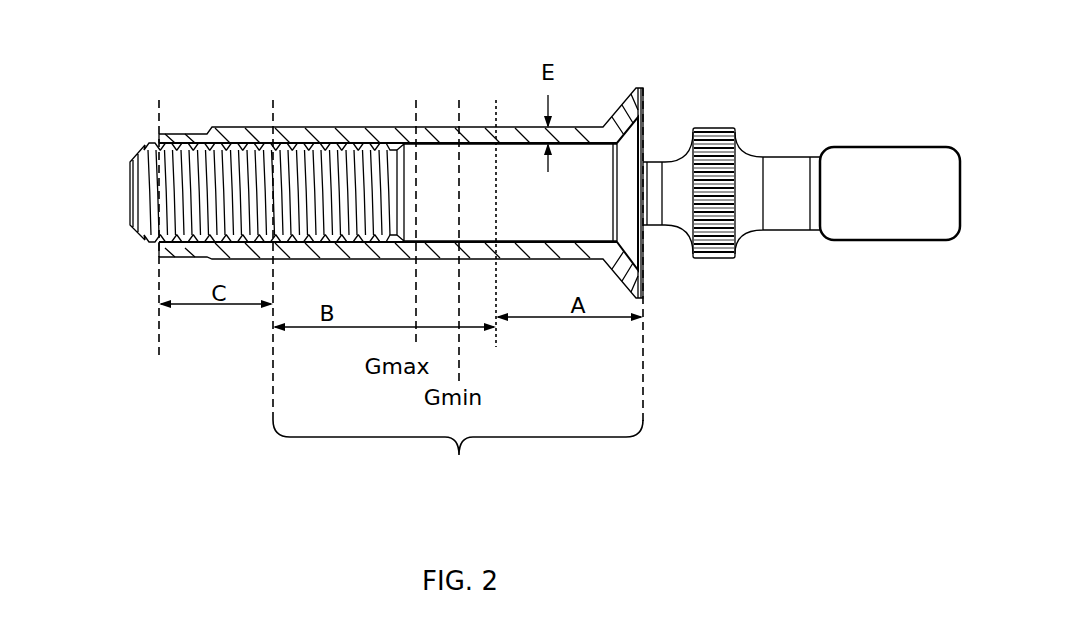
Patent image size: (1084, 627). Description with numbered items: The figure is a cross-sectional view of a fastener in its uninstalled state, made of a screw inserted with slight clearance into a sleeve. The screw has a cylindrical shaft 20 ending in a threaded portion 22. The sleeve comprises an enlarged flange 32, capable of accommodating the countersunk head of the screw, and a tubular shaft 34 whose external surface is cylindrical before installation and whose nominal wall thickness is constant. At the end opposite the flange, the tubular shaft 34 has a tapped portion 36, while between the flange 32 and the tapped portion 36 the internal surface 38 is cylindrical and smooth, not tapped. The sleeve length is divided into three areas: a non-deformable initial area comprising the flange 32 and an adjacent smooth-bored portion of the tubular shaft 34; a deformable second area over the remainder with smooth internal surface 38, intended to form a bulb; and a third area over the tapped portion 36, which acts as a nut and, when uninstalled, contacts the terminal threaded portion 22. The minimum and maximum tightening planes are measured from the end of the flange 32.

The cylindrical shaft 20 is at (500, 186).
The threaded portion 22 is at (150, 202).
The enlarged flange 32 is at (643, 110).
The tubular shaft 34 is at (402, 132).
The tapped portion 36 is at (235, 148).
The internal surface 38 is at (458, 460).